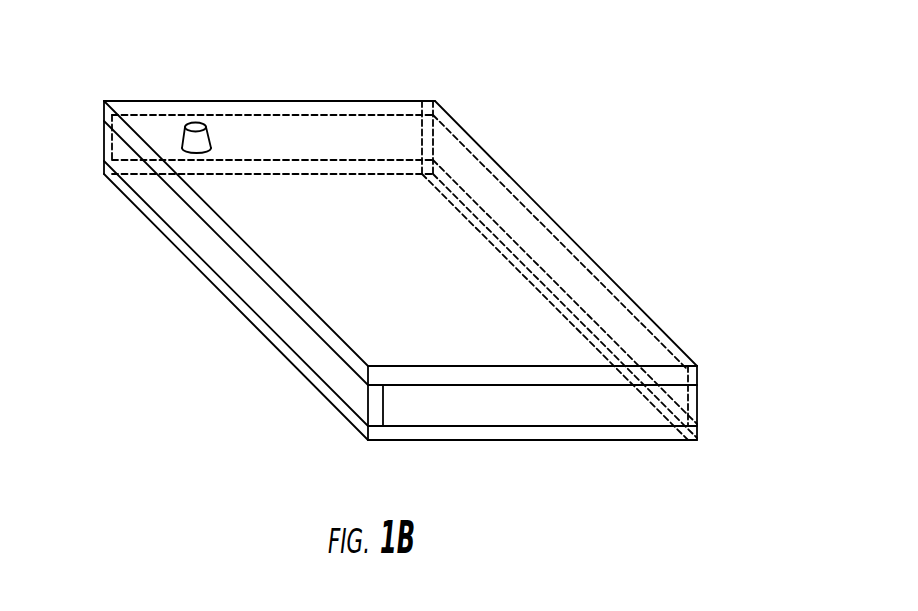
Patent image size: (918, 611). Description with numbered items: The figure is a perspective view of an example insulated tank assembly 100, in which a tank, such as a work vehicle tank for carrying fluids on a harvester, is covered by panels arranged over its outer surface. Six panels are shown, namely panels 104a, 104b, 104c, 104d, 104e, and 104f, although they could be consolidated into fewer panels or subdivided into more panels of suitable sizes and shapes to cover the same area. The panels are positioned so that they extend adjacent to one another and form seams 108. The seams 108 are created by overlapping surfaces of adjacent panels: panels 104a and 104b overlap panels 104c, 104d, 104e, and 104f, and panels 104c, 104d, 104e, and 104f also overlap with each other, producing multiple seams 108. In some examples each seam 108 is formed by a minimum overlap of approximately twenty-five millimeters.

The insulated tank assembly 100 is at (583, 90).
The panel 104a is at (280, 130).
The panel 104b is at (575, 442).
The panel 104c is at (243, 287).
The panel 104d is at (590, 260).
The panel 104e is at (102, 135).
The panel 104f is at (431, 415).
The seam 108 is at (358, 110).